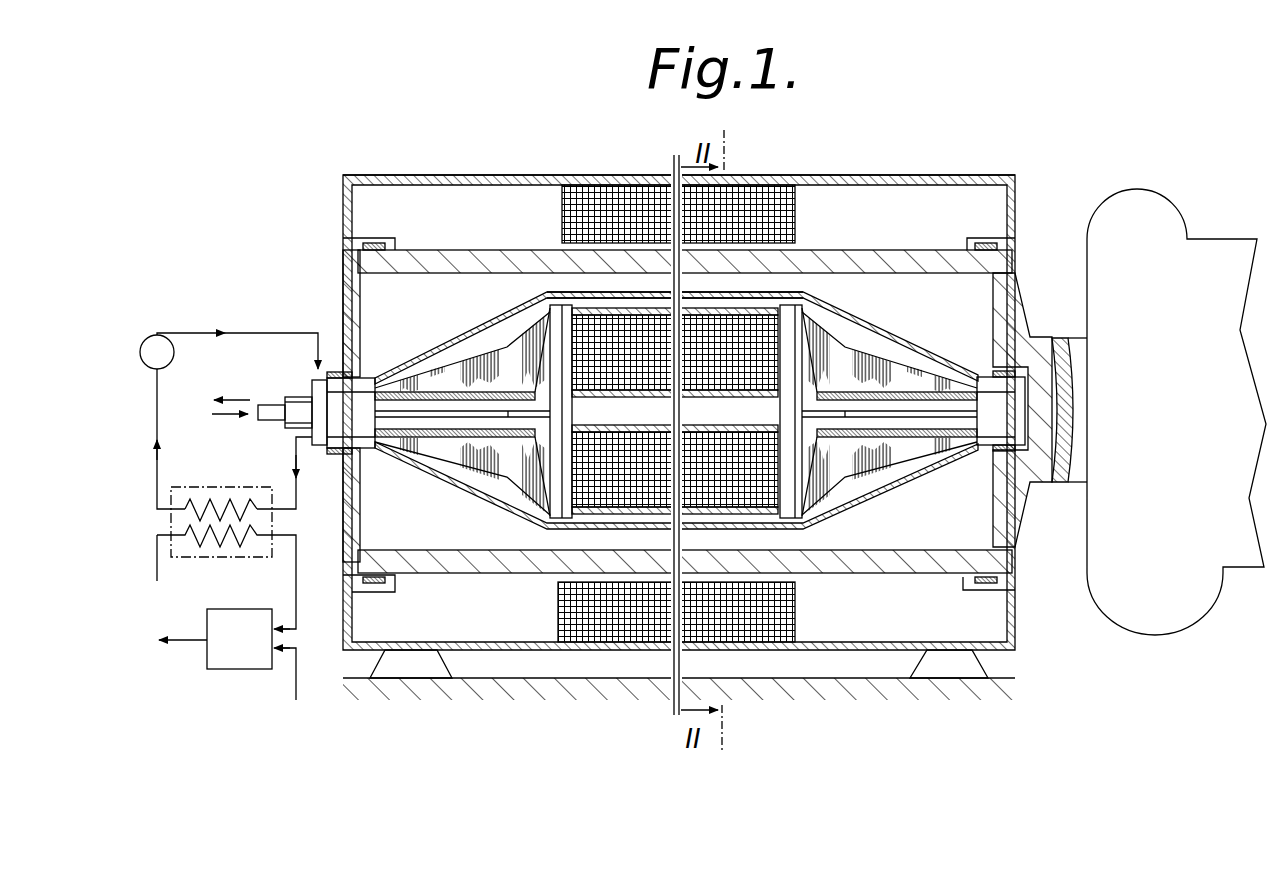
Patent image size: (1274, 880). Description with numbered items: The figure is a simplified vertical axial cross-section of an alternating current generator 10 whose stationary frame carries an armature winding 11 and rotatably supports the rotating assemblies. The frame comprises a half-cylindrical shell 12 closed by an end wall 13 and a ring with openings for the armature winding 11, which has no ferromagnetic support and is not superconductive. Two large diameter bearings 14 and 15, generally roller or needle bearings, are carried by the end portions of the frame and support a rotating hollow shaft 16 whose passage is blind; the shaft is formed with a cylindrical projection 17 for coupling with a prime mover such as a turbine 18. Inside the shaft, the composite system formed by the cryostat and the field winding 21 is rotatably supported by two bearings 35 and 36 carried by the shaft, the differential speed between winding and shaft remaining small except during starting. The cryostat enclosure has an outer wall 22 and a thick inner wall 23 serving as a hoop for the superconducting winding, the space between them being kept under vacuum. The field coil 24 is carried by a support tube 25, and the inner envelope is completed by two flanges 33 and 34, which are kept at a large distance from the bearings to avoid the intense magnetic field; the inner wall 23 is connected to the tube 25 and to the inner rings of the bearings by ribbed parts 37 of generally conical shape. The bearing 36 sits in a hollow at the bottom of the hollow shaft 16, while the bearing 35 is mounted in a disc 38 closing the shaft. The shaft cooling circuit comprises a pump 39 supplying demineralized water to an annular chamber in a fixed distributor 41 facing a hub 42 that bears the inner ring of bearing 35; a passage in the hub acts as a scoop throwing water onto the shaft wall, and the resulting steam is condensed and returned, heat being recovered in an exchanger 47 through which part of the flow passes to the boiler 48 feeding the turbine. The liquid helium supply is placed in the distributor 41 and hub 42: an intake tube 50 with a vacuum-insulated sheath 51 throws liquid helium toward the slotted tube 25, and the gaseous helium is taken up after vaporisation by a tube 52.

The dynamoelectric machine 10 is at (823, 172).
The armature winding 11 is at (604, 188).
The half-cylindrical shell 12 is at (473, 176).
The end wall 13 is at (841, 641).
The bearing 14 is at (378, 242).
The bearing 15 is at (983, 242).
The hollow shaft 16 is at (466, 255).
The cylindrical projection 17 is at (1070, 485).
The turbine 18 is at (1124, 428).
The field winding 21 is at (902, 328).
The outer wall 22 is at (775, 295).
The inner wall 23 is at (790, 305).
The field coil 24 is at (745, 377).
The support tube 25 is at (598, 392).
The flange 33 is at (555, 475).
The flange 34 is at (797, 455).
The bearing 35 is at (338, 371).
The bearing 36 is at (990, 451).
The conical spider 37 is at (440, 380).
The disc 38 is at (360, 300).
The pump 39 is at (229, 402).
The fixed distributor 41 is at (320, 440).
The hub 42 is at (343, 413).
The exchanger 47 is at (229, 557).
The boiler 48 is at (246, 669).
The intake tube 50 is at (233, 417).
The sheath 51 is at (264, 421).
The tube 52 is at (253, 402).